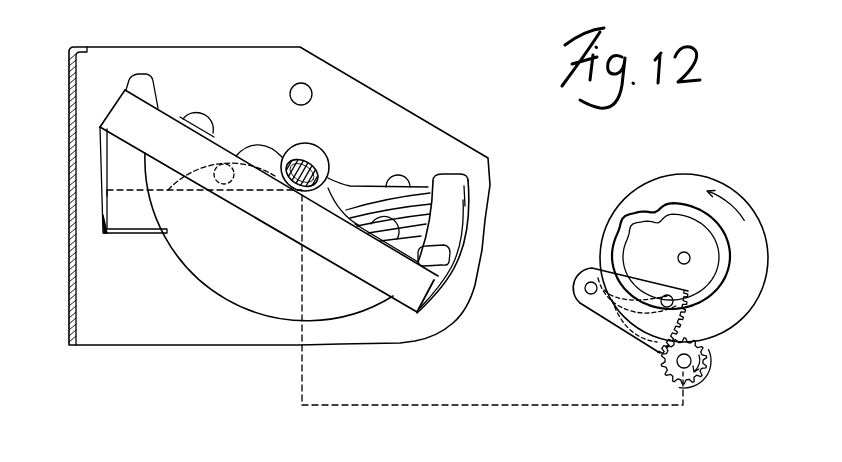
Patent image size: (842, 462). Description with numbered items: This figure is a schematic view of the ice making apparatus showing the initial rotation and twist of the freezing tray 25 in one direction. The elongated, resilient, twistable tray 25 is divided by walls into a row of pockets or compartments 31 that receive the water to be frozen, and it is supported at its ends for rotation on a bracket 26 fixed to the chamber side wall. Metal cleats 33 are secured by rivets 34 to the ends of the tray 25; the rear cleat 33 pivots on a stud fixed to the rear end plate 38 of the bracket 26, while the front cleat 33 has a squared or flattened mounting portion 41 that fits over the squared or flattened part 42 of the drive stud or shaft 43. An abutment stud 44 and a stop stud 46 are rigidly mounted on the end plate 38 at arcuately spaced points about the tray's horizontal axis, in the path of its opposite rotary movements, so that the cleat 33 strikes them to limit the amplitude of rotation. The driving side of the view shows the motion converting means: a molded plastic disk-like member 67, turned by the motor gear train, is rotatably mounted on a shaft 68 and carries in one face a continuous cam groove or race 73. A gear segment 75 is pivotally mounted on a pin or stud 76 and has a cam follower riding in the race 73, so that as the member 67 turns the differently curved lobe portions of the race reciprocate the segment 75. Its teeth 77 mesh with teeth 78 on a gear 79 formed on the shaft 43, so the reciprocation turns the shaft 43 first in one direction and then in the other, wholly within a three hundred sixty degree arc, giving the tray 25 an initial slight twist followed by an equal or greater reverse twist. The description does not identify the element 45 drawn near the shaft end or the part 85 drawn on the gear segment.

The freezing tray 25 is at (463, 196).
The bracket 26 is at (69, 126).
The pockets or compartments 31 is at (413, 218).
The metal cleats 33 is at (350, 184).
The rivets 34 is at (202, 120).
The rear end plate of bracket 38 is at (387, 100).
The squared mounting portion 41 is at (308, 160).
The squared part of drive shaft 42 is at (300, 155).
The drive stud or shaft 43 is at (510, 407).
The abutment stud 44 is at (228, 165).
The key 45 is at (297, 178).
The stop stud 46 is at (305, 88).
The disk-like member 67 is at (690, 183).
The shaft 68 is at (685, 252).
The cam groove or race 73 is at (728, 283).
The gear segment 75 is at (602, 305).
The pin or stud 76 is at (588, 283).
The teeth of gear segment 77 is at (680, 318).
The teeth of gear 78 is at (662, 365).
The gear 79 is at (678, 380).
The follower pin 85 is at (654, 294).